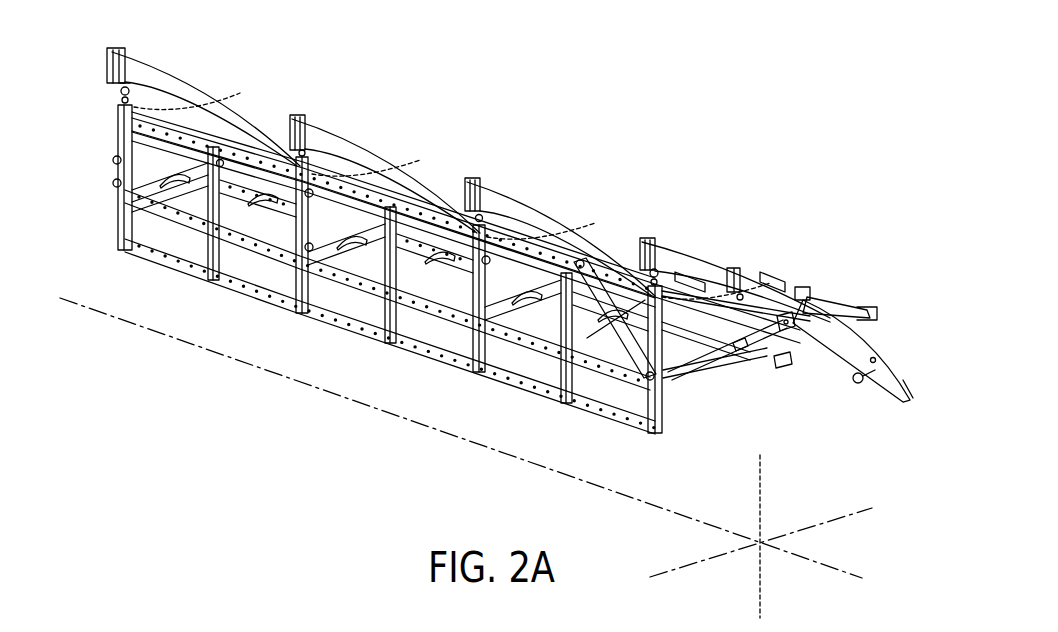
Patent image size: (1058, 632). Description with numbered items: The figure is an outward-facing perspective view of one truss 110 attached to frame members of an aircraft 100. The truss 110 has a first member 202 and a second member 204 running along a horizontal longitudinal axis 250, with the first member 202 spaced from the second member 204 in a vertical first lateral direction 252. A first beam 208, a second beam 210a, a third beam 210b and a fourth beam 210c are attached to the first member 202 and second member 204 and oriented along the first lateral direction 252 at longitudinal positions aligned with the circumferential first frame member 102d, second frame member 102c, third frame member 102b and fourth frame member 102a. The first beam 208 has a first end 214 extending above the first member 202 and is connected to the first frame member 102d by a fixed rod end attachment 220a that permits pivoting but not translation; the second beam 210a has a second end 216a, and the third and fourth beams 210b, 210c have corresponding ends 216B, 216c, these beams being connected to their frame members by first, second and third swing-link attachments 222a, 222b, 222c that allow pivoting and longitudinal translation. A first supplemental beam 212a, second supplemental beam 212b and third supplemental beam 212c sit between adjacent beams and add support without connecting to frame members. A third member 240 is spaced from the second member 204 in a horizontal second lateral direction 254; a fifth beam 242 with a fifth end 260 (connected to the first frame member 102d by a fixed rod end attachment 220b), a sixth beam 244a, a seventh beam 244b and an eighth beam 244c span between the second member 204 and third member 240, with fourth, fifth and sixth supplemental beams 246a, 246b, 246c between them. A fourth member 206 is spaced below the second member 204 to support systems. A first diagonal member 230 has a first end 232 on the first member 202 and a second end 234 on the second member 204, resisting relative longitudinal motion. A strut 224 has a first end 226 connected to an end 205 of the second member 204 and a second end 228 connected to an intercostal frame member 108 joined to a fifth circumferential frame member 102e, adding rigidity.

The aircraft 100 is at (533, 82).
The fourth frame member 102a is at (245, 118).
The third frame member 102b is at (408, 178).
The second frame member 102c is at (580, 222).
The first frame member 102d is at (696, 268).
The fifth circumferential frame member 102e is at (870, 350).
The another frame member 108 is at (830, 316).
The truss 110 is at (291, 412).
The first member 202 is at (158, 134).
The second member 204 is at (190, 214).
The end of the second member 205 is at (666, 362).
The fourth member 206 is at (166, 257).
The first beam 208 is at (663, 403).
The second beam 210a is at (484, 350).
The third beam 210b is at (309, 287).
The fourth beam 210c is at (118, 207).
The first supplemental beam 212a is at (577, 393).
The second supplemental beam 212b is at (398, 312).
The third supplemental beam 212c is at (220, 266).
The first end 214 is at (690, 278).
The second end 216a is at (553, 212).
The hidden spar contour 216B is at (368, 160).
The hidden spar contour 216c is at (186, 106).
The fixed rod end attachment 220a is at (676, 269).
The fixed rod end attachment 220b is at (780, 362).
The first swing-link attachment 222a is at (487, 228).
The second swing-link attachment 222b is at (348, 138).
The third swing-link attachment 222c is at (168, 82).
The strut 224 is at (776, 278).
The first end of the strut 226 is at (693, 370).
The second end of the strut 228 is at (828, 305).
The first diagonal member 230 is at (586, 345).
The first end 232 is at (583, 266).
The second end 234 is at (637, 384).
The third member 240 is at (707, 357).
The fifth beam 242 is at (738, 360).
The sixth beam 244a is at (513, 310).
The seventh beam 244b is at (340, 234).
The eighth beam 244c is at (177, 195).
The fourth supplemental beam 246a is at (588, 340).
The fifth supplemental beam 246b is at (420, 263).
The sixth supplemental beam 246c is at (262, 231).
The longitudinal axis 250 is at (152, 330).
The first lateral direction 252 is at (760, 486).
The second lateral direction 254 is at (855, 510).
The fifth end 260 is at (758, 347).